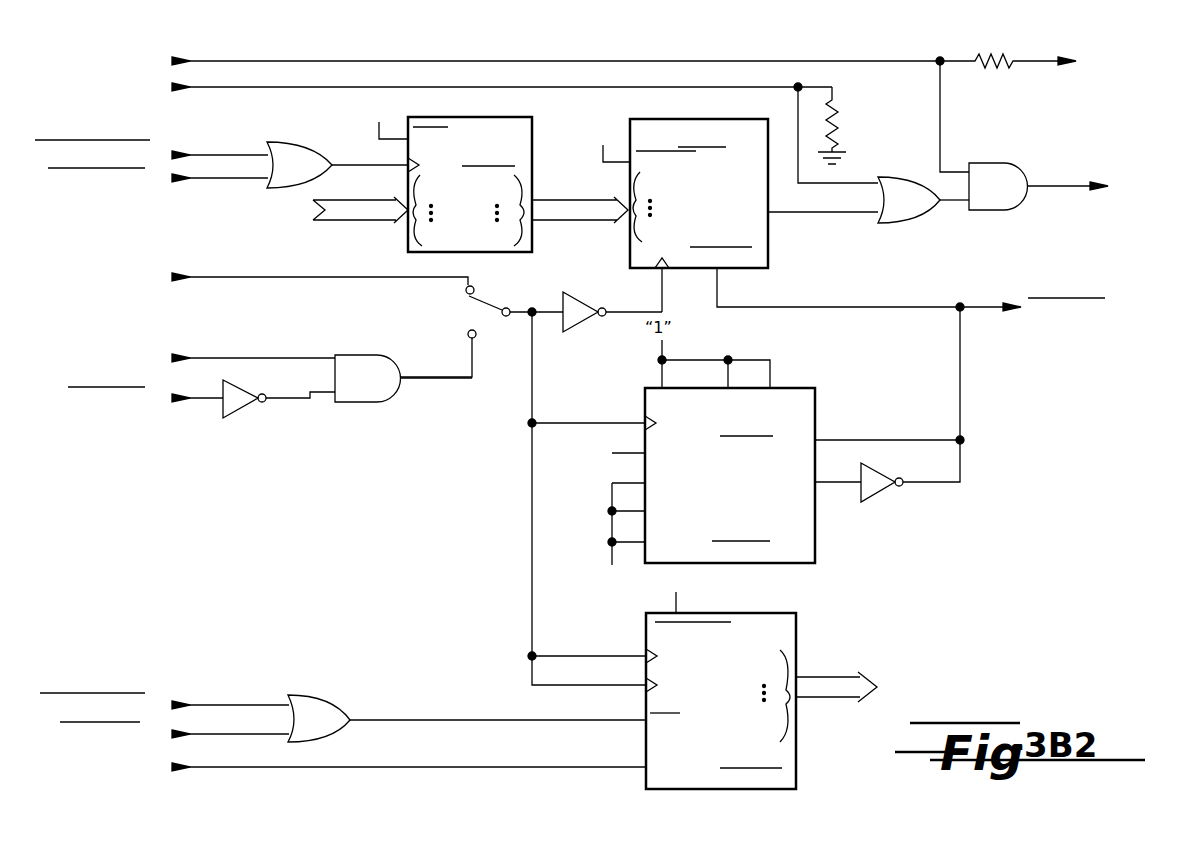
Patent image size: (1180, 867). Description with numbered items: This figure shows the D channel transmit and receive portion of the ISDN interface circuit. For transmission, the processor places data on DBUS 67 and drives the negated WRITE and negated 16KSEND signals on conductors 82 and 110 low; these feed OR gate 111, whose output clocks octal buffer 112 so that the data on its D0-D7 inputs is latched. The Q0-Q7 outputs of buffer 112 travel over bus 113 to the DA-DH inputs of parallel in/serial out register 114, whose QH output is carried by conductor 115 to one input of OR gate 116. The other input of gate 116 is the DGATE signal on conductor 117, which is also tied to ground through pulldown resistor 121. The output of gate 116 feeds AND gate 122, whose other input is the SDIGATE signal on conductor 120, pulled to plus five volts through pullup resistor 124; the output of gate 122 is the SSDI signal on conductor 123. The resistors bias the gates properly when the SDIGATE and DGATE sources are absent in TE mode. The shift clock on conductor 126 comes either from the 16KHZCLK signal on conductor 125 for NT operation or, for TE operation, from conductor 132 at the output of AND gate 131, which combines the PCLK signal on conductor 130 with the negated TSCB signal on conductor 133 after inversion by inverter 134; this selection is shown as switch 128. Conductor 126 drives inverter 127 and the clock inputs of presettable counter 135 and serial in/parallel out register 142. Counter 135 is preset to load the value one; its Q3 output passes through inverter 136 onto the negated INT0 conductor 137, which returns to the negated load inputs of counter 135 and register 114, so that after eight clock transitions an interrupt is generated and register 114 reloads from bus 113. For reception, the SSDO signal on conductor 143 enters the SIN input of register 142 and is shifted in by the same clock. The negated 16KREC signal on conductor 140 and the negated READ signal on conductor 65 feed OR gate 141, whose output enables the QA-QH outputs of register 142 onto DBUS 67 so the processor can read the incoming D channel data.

The SDIGATE conductor 120 is at (304, 62).
The DGATE conductor 117 is at (308, 88).
The negated 16KSEND conductor 110 is at (248, 152).
The negated WRITE conductor 82 is at (236, 188).
The OR gate 111 is at (318, 140).
The DBUS 67 is at (377, 226).
The octal buffer 112 is at (472, 117).
The bus 113 is at (598, 218).
The parallel in/serial out register 114 is at (696, 117).
The conductor 115 is at (796, 216).
The OR gate 116 is at (890, 226).
The pulldown resistor 121 is at (840, 110).
The AND gate 122 is at (998, 212).
The SSDI conductor 123 is at (1050, 160).
The pullup resistor 124 is at (987, 74).
The 16KHZCLK conductor 125 is at (258, 277).
The clock conductor 126 is at (550, 314).
The inverter 127 is at (568, 330).
The switch 128 is at (508, 280).
The PCLK conductor 130 is at (278, 360).
The AND gate 131 is at (372, 350).
The conductor 132 is at (452, 382).
The negated TSCB conductor 133 is at (196, 400).
The inverter 134 is at (232, 418).
The presettable counter 135 is at (786, 388).
The inverter 136 is at (876, 498).
The negated INT0 conductor 137 is at (998, 305).
The negated 16KREC conductor 140 is at (244, 706).
The negated READ conductor 65 is at (246, 734).
The OR gate 141 is at (336, 690).
The serial in/parallel out register 142 is at (744, 614).
The SSDO conductor 143 is at (252, 768).